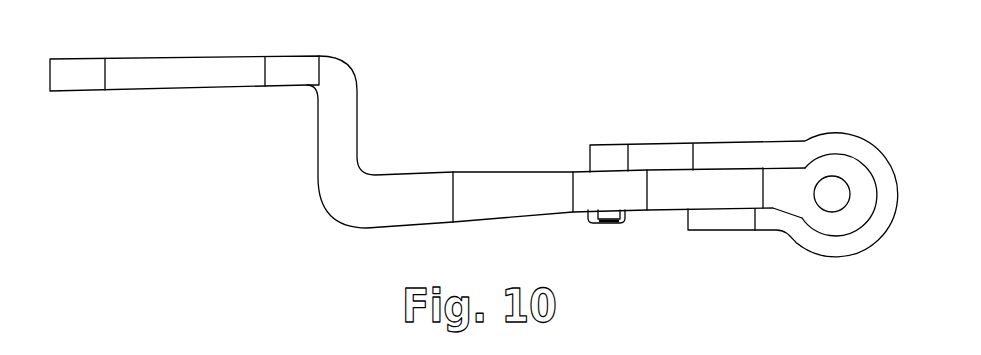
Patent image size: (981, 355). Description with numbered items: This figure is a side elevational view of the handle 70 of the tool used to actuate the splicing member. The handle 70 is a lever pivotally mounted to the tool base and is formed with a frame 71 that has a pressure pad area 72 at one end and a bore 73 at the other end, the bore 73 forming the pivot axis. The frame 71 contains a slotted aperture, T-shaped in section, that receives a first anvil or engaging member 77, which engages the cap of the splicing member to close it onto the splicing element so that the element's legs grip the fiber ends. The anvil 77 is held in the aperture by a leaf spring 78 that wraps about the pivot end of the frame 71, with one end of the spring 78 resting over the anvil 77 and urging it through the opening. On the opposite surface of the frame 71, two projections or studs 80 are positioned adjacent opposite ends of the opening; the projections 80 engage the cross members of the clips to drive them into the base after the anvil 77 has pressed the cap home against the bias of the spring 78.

The handle 70 is at (546, 108).
The frame 71 is at (492, 209).
The pressure pad area 72 is at (167, 56).
The bore 73 is at (818, 189).
The anvil 77 is at (623, 227).
The leaf spring 78 is at (673, 143).
The projections 80 is at (608, 225).